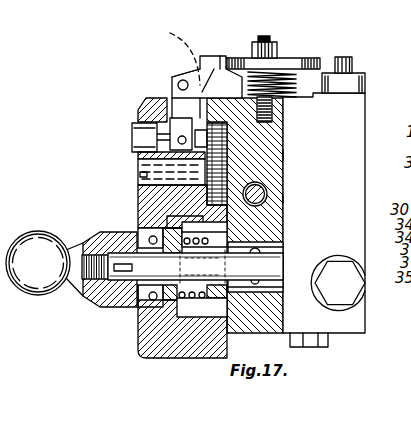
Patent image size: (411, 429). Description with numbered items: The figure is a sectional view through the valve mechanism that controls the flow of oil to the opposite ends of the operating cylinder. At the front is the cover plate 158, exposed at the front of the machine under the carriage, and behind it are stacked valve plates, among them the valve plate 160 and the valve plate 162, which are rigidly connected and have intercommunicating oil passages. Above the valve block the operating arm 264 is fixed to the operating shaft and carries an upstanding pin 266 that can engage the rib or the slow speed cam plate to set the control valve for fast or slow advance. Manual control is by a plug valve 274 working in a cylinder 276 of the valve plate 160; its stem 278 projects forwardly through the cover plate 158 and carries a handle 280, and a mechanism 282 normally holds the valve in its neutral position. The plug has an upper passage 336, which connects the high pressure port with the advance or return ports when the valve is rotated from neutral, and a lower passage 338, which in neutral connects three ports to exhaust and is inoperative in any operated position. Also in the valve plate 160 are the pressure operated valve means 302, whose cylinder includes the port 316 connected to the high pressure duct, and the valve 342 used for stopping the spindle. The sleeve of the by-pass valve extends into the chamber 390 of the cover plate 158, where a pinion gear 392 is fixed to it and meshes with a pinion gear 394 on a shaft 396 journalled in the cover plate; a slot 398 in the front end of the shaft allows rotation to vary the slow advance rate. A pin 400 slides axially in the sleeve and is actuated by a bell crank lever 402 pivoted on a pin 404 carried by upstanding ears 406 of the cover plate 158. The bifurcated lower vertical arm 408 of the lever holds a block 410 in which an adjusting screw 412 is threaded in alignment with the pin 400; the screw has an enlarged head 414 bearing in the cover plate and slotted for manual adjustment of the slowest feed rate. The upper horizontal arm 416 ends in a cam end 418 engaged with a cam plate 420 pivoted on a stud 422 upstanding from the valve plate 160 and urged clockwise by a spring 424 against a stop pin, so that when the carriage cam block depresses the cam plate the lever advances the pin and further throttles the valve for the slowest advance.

The cover plate 158 is at (173, 352).
The valve plate 160 is at (262, 322).
The valve plate 162 is at (356, 322).
The operating arm 264 is at (367, 82).
The upstanding pin 266 is at (353, 62).
The plug valve 274 is at (243, 288).
The cylinder 276 is at (283, 246).
The stem 278 is at (142, 270).
The handle 280 is at (43, 283).
The neutral-holding mechanism 282 is at (273, 205).
The pressure operated valve means 302 is at (265, 186).
The port 316 is at (276, 176).
The upper passage 336 is at (262, 253).
The lower passage 338 is at (260, 280).
The valve 342 is at (255, 216).
The chamber 390 is at (283, 125).
The pinion gear 392 is at (225, 137).
The pinion gear 394 is at (227, 167).
The shaft 396 is at (140, 156).
The slot 398 is at (140, 174).
The pin 400 is at (210, 110).
The bell crank lever 402 is at (177, 80).
The pin 404 is at (181, 77).
The upstanding ears 406 is at (171, 51).
The lower vertical arm 408 is at (178, 97).
The block 410 is at (133, 107).
The adjusting screw 412 is at (170, 119).
The enlarged head 414 is at (132, 128).
The upper horizontal arm 416 is at (202, 56).
The cam end 418 is at (220, 58).
The cam plate 420 is at (273, 63).
The stud 422 is at (267, 37).
The spring 424 is at (287, 80).